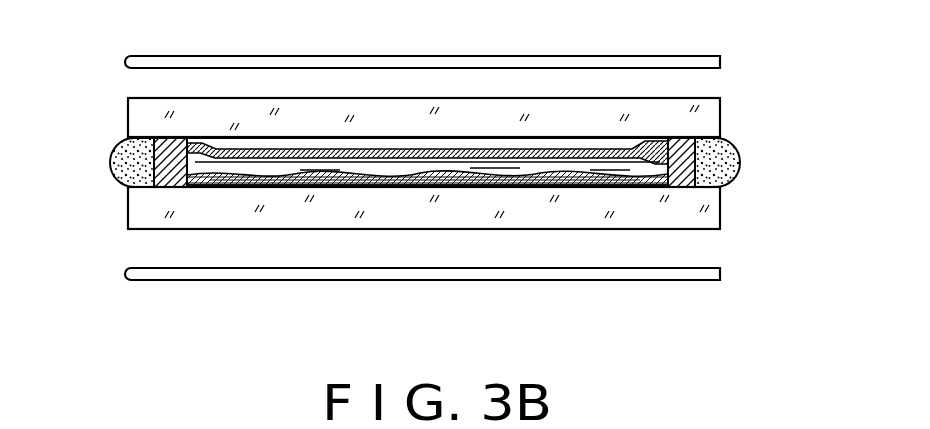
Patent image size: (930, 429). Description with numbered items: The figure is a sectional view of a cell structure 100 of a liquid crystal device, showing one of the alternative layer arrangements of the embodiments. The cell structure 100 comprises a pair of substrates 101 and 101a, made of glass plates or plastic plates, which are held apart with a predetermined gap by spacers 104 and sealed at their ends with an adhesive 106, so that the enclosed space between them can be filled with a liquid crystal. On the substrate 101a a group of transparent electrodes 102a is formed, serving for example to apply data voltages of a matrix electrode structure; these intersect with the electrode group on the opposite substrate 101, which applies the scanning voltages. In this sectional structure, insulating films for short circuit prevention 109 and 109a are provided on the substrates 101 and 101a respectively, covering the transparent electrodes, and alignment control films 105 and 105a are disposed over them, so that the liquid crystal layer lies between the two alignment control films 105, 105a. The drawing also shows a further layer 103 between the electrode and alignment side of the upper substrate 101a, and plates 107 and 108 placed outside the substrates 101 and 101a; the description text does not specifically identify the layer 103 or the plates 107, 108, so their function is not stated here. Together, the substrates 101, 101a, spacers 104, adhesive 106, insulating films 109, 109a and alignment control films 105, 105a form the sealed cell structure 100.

The cell structure 100 is at (822, 99).
The substrate 101 is at (705, 212).
The substrate 101a is at (715, 118).
The transparent electrode 102a is at (516, 150).
The alignment film 103 is at (305, 162).
The spacer 104 is at (174, 140).
The alignment control film 105 is at (476, 187).
The alignment control film 105a is at (443, 175).
The adhesive 106 is at (735, 162).
The lower polarizing plate 107 is at (722, 274).
The upper polarizing plate 108 is at (720, 62).
The insulating film for short circuit prevention 109 is at (640, 187).
The insulating film for short circuit prevention 109a is at (622, 178).